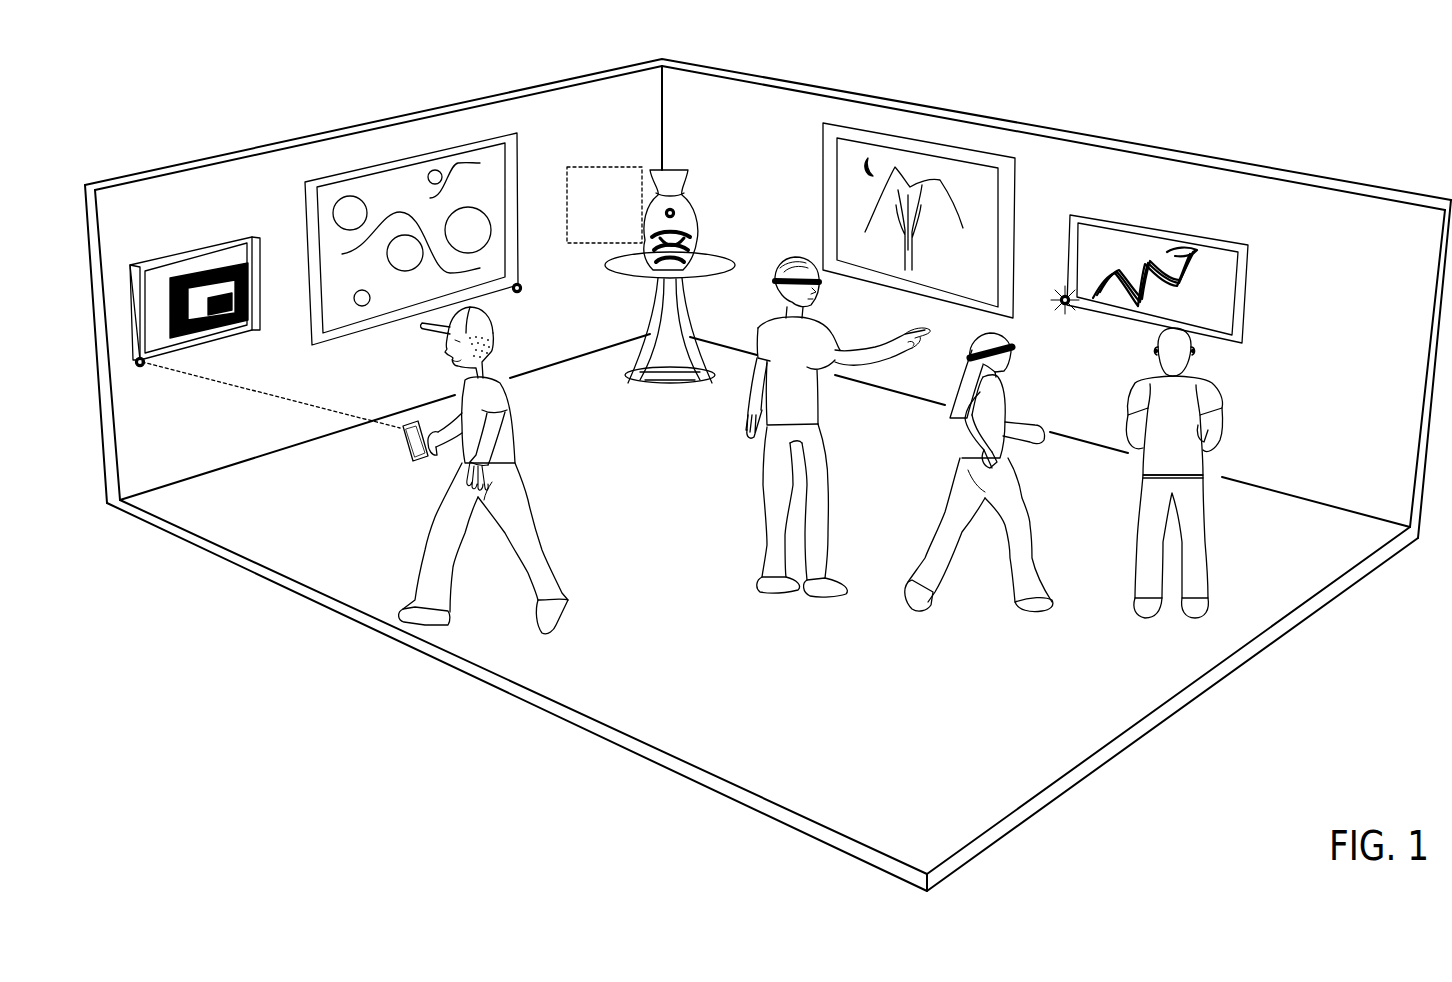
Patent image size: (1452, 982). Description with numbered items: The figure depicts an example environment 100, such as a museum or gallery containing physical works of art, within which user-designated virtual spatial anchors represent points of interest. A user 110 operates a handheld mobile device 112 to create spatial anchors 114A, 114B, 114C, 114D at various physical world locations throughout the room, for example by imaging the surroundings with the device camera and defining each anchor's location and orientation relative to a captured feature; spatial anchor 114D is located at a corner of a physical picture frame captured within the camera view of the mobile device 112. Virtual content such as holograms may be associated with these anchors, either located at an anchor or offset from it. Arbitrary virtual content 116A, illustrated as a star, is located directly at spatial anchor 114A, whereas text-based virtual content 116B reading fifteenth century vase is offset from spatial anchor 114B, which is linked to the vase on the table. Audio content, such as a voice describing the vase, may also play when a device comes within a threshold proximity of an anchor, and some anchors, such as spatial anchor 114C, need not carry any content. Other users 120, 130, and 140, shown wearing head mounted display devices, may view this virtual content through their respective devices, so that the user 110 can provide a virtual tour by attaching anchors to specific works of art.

The environment 100 is at (1255, 82).
The user 110 is at (430, 531).
The mobile device 112 is at (400, 436).
The spatial anchor 114A is at (1066, 306).
The spatial anchor 114B is at (675, 212).
The spatial anchor 114C is at (521, 291).
The spatial anchor 114D is at (142, 367).
The virtual content 116A is at (1063, 294).
The virtual content 116B is at (632, 167).
The user 120 is at (765, 545).
The user 130 is at (908, 580).
The user 140 is at (1143, 598).